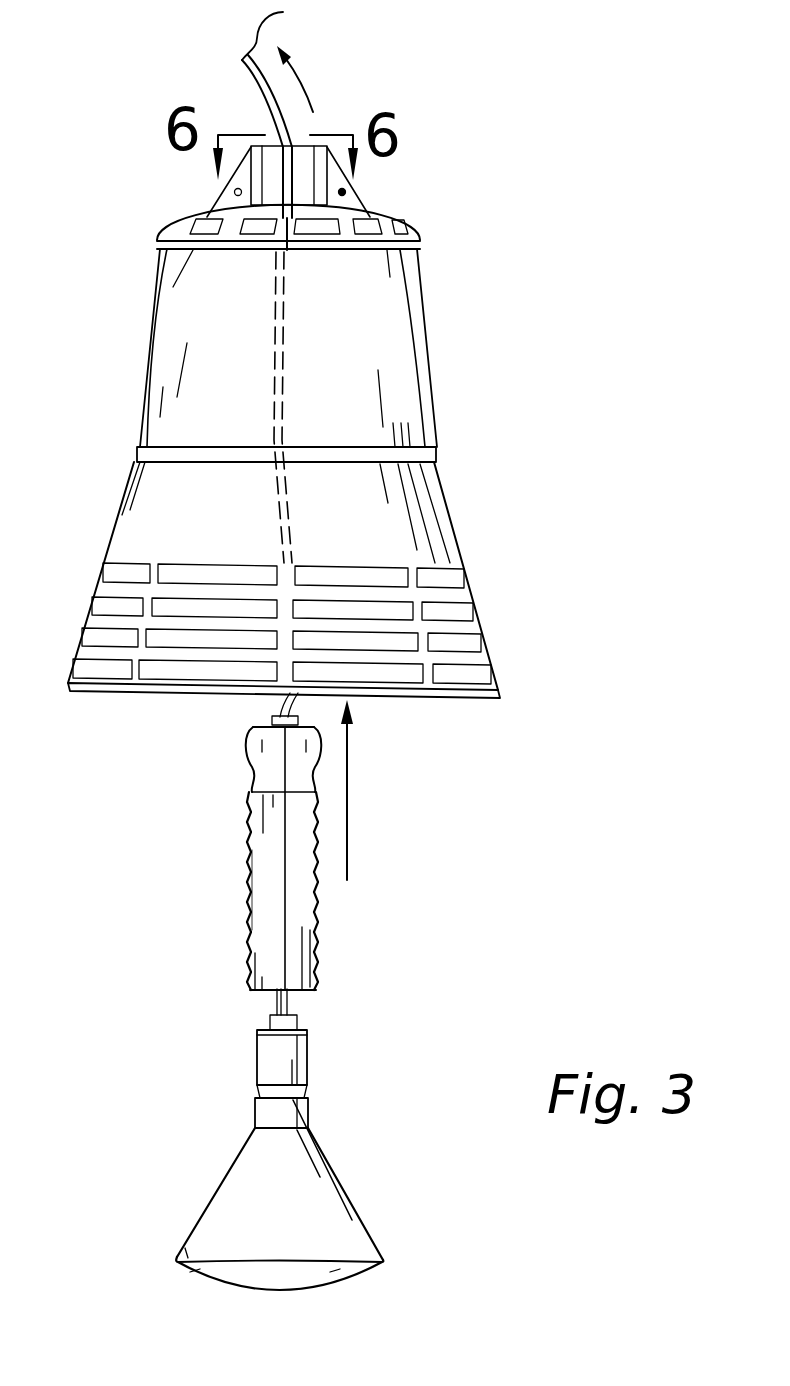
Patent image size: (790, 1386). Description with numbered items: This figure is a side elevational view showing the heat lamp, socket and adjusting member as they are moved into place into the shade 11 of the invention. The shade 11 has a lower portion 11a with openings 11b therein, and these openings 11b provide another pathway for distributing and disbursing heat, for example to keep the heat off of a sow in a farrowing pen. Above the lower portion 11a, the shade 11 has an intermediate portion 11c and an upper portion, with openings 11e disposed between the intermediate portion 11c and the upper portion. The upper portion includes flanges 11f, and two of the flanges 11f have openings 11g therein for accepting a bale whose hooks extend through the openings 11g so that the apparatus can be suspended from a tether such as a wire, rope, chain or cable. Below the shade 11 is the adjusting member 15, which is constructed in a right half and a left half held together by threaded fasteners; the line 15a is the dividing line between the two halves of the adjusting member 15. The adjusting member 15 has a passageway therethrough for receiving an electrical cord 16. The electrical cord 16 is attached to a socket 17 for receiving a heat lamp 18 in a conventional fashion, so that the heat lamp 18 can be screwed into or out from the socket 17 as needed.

The shade 11 is at (276, 422).
The lower portion 11a is at (135, 524).
The openings 11b is at (108, 608).
The intermediate portion 11c is at (393, 348).
The openings 11e is at (374, 217).
The flanges 11f is at (224, 200).
The openings 11g is at (346, 192).
The adjusting member 15 is at (287, 853).
The line 15a is at (280, 928).
The electrical cord 16 is at (356, 1001).
The socket 17 is at (306, 1056).
The heat lamp 18 is at (320, 1148).